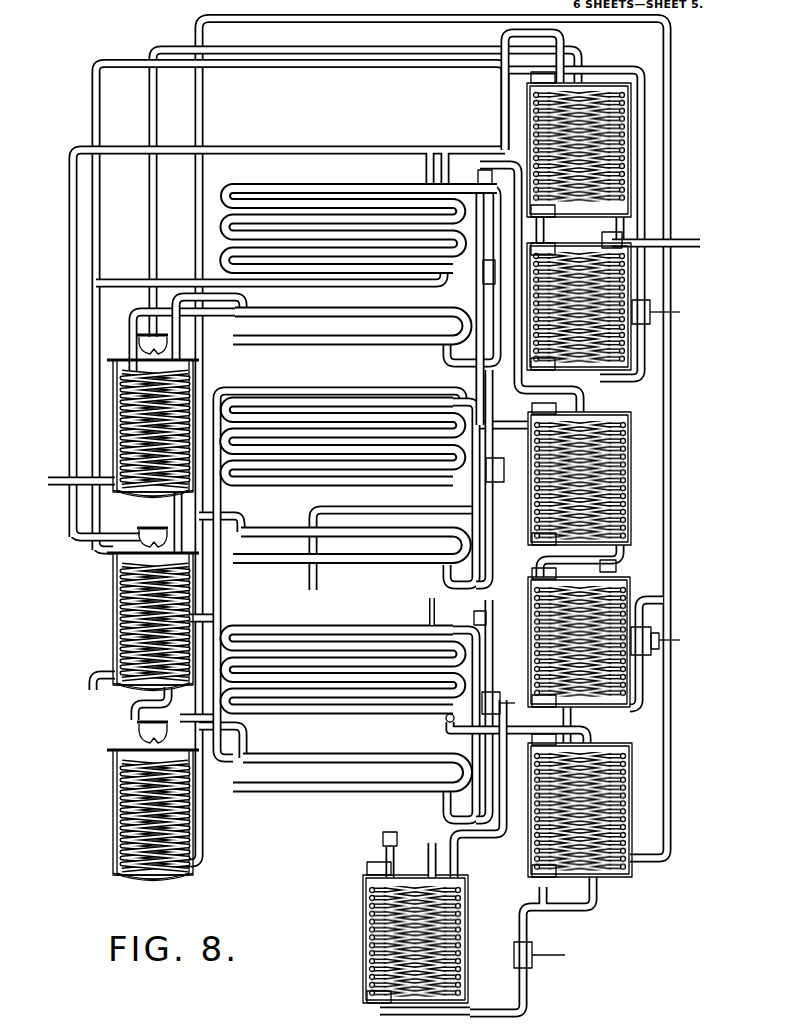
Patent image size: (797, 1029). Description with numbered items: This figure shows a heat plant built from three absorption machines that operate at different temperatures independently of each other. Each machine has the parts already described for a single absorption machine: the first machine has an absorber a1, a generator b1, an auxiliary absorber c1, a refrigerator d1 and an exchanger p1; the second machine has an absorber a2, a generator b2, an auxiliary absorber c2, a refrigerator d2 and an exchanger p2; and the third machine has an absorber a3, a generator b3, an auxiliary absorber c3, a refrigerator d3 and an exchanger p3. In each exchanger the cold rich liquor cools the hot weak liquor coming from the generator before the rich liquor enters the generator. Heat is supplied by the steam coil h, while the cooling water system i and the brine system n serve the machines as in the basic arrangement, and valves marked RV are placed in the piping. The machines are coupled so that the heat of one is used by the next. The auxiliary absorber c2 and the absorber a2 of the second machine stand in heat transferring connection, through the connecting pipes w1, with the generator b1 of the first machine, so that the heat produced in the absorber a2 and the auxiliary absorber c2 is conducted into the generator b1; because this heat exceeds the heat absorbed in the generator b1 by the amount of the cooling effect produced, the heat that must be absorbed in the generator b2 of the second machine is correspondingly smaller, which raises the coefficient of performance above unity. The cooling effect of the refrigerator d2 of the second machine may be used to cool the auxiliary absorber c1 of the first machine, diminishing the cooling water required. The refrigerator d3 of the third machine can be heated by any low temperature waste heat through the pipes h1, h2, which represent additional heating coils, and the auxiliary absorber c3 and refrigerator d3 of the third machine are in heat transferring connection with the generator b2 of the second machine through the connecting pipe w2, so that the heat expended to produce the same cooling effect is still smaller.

The steam coil h is at (421, 431).
The additional heating coil h1 is at (55, 480).
The additional heating coil h2 is at (90, 688).
The connecting pipes w1 is at (202, 843).
The connecting pipe w2 is at (318, 150).
The absorber a3 is at (333, 196).
The absorber a2 is at (262, 478).
The absorber a1 is at (314, 637).
The exchanger p3 is at (228, 338).
The exchanger p2 is at (358, 556).
The exchanger p1 is at (308, 800).
The generator b3 is at (114, 402).
The generator b2 is at (113, 605).
The generator b1 is at (146, 801).
The auxiliary absorber c3 is at (630, 174).
The auxiliary absorber c2 is at (632, 490).
The auxiliary absorber c1 is at (632, 806).
The refrigerator d3 is at (625, 358).
The refrigerator d2 is at (637, 667).
The refrigerator d1 is at (468, 940).
The reducing valve RV is at (698, 236).
The cooling water system i is at (428, 612).
The brine system n is at (440, 852).